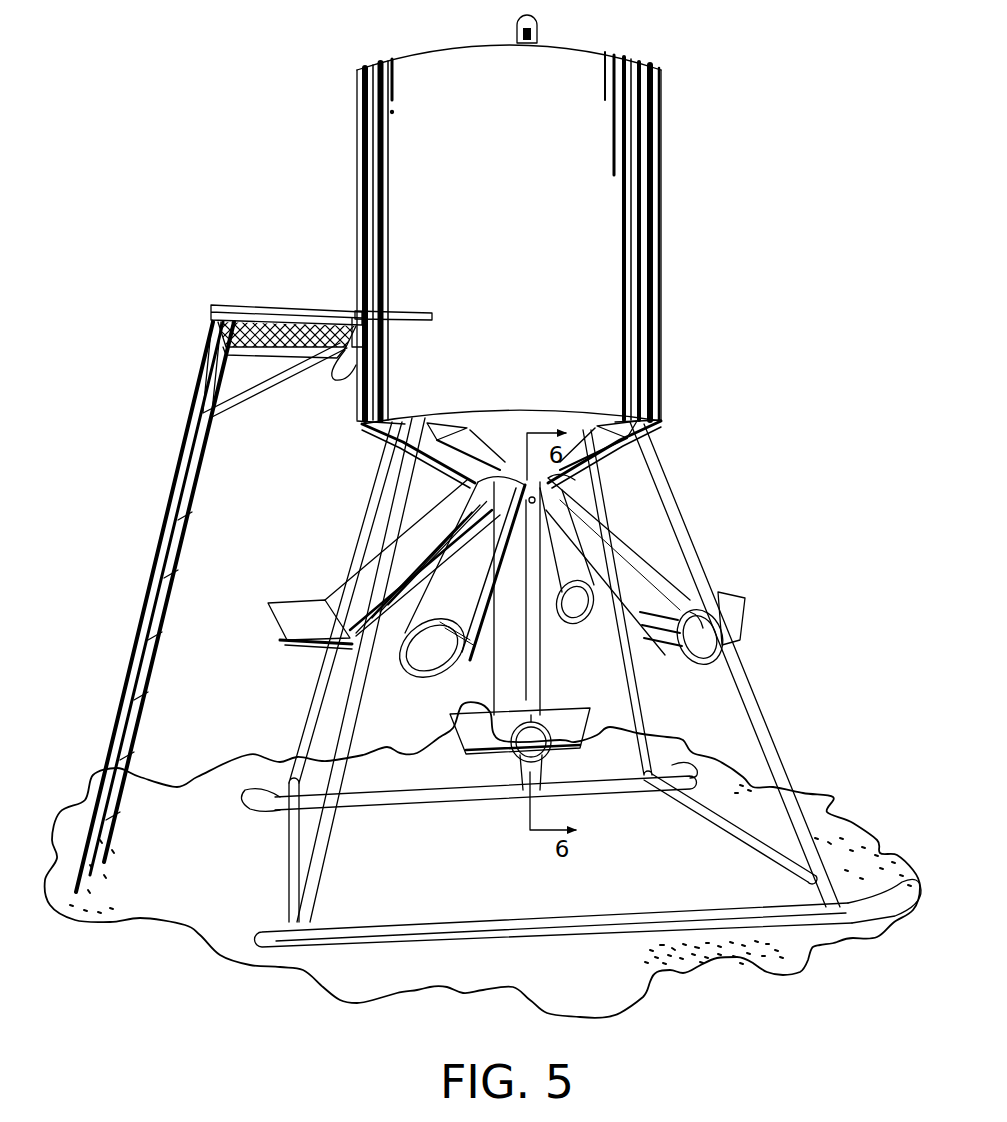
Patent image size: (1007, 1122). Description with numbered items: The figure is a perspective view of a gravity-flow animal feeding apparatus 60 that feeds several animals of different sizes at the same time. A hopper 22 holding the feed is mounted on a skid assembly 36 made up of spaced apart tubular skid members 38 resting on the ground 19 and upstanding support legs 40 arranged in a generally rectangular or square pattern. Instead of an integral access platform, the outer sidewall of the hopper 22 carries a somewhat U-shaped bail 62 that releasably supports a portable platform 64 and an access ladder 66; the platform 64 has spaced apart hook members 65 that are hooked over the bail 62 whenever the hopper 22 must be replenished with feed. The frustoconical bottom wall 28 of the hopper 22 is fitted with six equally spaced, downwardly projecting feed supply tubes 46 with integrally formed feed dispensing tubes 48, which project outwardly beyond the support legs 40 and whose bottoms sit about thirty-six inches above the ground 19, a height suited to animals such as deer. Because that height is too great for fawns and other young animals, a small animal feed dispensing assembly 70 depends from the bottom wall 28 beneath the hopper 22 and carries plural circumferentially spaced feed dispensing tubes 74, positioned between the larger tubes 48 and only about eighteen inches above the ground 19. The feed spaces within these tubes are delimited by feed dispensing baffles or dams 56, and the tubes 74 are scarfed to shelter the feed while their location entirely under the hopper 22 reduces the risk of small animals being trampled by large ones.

The ground 19 is at (690, 950).
The hopper 22 is at (670, 152).
The frustoconical bottom wall 28 is at (372, 440).
The skid assembly 36 is at (545, 952).
The tubular skid members 38 is at (615, 792).
The support legs 40 is at (690, 531).
The feed supply tubes 46 is at (498, 480).
The feed dispensing tubes 48 is at (733, 595).
The feed dispensing baffles or dams 56 is at (706, 665).
The feeding apparatus 60 is at (332, 189).
The U-shaped bail 62 is at (415, 312).
The portable platform 64 is at (285, 306).
The hook members 65 is at (357, 322).
The access ladder 66 is at (170, 614).
The small animal feed dispensing assembly 70 is at (545, 676).
The feed dispensing tubes 74 is at (450, 716).